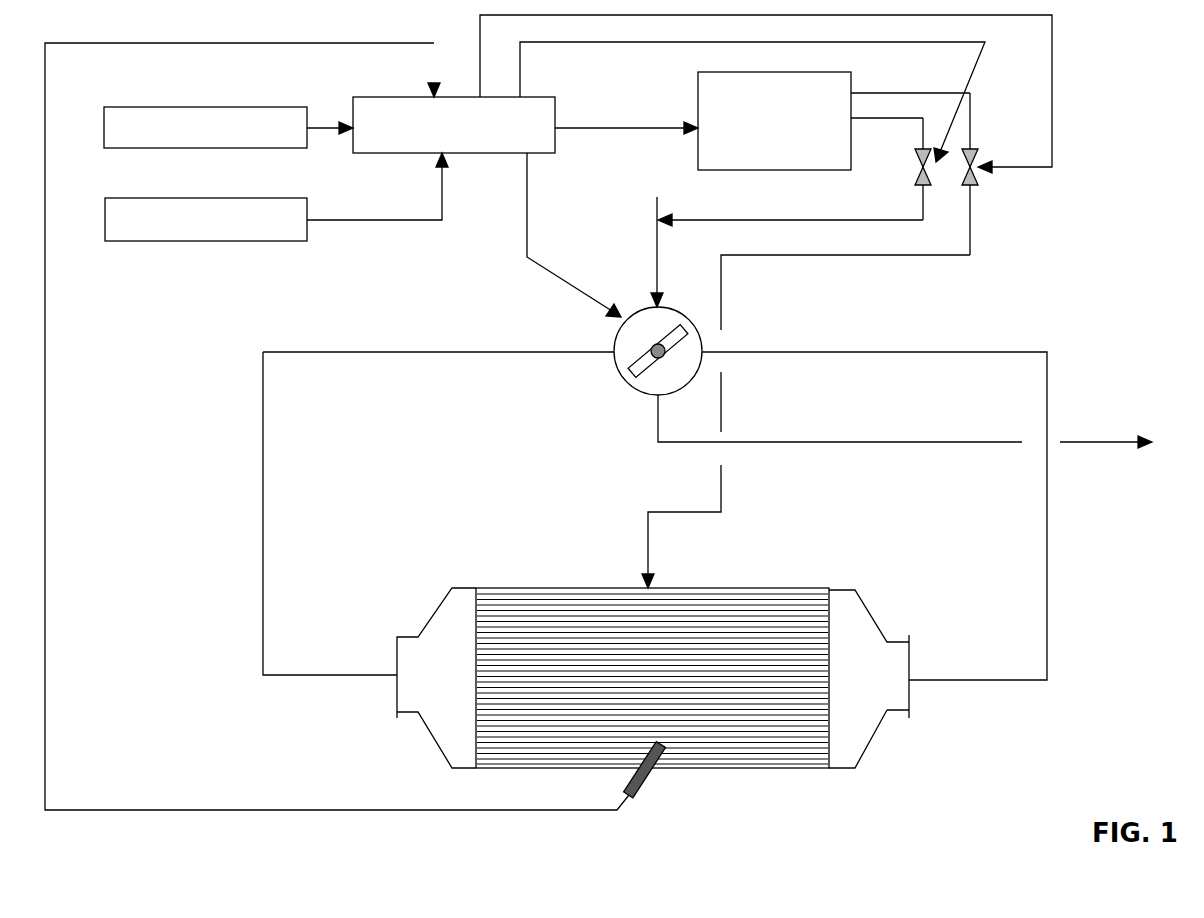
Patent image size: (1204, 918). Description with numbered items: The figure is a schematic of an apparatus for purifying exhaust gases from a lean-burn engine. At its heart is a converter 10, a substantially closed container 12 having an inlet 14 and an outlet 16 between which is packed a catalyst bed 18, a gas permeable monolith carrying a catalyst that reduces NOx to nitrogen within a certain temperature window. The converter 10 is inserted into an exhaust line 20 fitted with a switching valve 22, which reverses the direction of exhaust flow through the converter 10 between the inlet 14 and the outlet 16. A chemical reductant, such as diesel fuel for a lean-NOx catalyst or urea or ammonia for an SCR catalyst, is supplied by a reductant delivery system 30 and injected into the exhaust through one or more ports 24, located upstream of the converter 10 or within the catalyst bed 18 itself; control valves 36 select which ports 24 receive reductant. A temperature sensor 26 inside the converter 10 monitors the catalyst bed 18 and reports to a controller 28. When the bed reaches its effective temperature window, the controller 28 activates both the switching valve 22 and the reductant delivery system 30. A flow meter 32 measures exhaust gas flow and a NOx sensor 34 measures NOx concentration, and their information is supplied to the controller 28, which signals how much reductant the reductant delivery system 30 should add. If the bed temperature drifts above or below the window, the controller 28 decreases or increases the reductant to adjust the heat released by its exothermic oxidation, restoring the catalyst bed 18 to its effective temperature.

The converter 10 is at (653, 673).
The closed container 12 is at (710, 588).
The inlet 14 is at (438, 648).
The outlet 16 is at (880, 648).
The catalyst bed 18 is at (762, 750).
The exhaust line 20 is at (636, 247).
The switching valve 22 is at (622, 373).
The port 24 is at (812, 218).
The temperature sensor 26 is at (650, 784).
The controller 28 is at (481, 155).
The reductant delivery system 30 is at (843, 80).
The flow meter 32 is at (214, 106).
The NOx sensor 34 is at (217, 201).
The control valve 36 is at (930, 192).